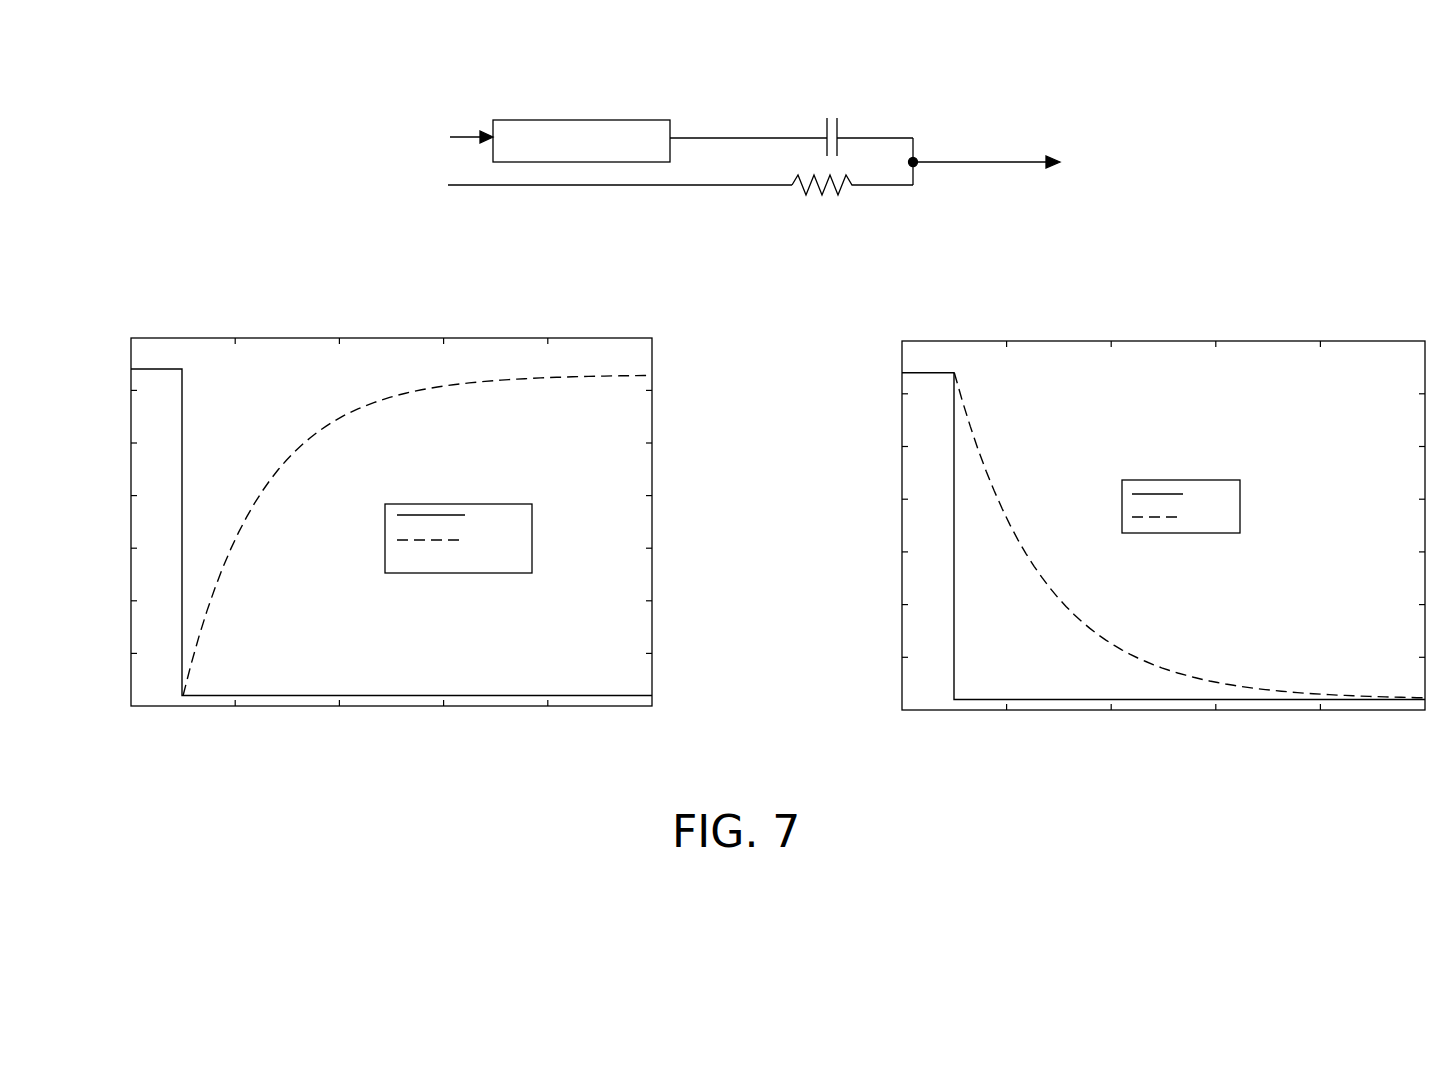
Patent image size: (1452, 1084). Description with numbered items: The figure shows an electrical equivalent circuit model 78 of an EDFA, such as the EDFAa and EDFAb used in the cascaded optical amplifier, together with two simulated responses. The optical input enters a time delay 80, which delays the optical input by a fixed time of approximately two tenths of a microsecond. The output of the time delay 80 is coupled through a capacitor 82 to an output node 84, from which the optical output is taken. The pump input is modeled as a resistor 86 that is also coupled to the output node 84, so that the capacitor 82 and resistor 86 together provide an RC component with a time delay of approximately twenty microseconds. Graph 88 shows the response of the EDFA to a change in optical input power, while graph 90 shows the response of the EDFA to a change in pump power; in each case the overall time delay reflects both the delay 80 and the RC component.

The model 78 is at (486, 77).
The time delay 80 is at (585, 121).
The capacitor 82 is at (879, 120).
The output node 84 is at (918, 166).
The resistor 86 is at (798, 210).
The graph 88 is at (357, 515).
The graph 90 is at (1129, 522).